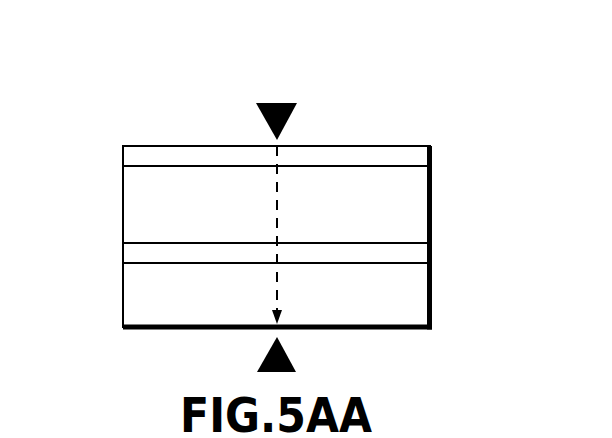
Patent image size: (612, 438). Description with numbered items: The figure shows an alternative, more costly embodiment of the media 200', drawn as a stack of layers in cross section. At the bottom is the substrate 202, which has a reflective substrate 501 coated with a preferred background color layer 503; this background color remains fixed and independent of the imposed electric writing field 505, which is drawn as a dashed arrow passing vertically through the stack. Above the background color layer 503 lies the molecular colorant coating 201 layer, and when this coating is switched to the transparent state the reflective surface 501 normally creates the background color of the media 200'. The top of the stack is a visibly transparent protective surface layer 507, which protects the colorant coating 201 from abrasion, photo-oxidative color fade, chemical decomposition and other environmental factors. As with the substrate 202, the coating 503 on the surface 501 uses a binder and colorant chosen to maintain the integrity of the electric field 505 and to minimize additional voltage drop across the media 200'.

The media 200' is at (260, 172).
The protective surface layer 507 is at (432, 156).
The molecular colorant coating layer 201 is at (432, 210).
The background color layer 503 is at (432, 255).
The substrate 202 is at (432, 298).
The reflective substrate 501 is at (183, 263).
The electric writing field 505 is at (278, 211).